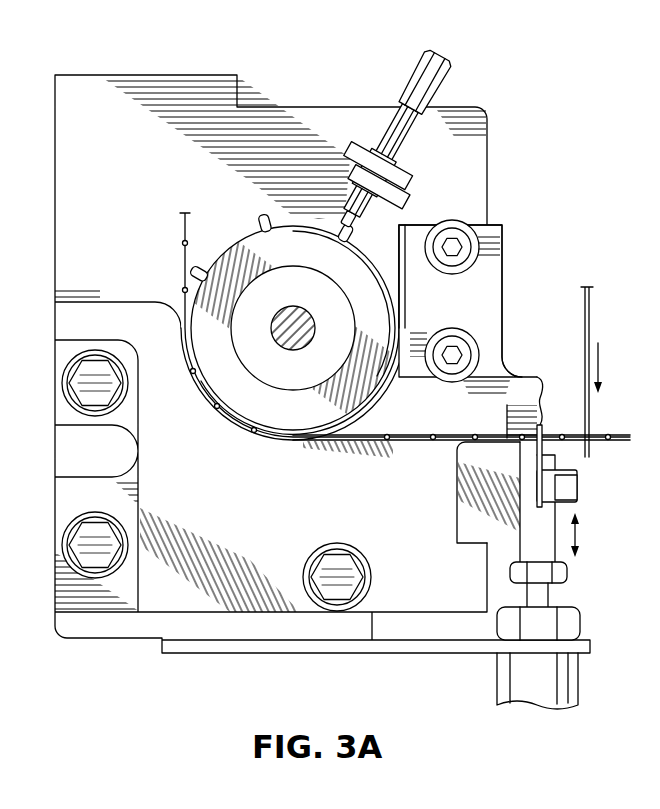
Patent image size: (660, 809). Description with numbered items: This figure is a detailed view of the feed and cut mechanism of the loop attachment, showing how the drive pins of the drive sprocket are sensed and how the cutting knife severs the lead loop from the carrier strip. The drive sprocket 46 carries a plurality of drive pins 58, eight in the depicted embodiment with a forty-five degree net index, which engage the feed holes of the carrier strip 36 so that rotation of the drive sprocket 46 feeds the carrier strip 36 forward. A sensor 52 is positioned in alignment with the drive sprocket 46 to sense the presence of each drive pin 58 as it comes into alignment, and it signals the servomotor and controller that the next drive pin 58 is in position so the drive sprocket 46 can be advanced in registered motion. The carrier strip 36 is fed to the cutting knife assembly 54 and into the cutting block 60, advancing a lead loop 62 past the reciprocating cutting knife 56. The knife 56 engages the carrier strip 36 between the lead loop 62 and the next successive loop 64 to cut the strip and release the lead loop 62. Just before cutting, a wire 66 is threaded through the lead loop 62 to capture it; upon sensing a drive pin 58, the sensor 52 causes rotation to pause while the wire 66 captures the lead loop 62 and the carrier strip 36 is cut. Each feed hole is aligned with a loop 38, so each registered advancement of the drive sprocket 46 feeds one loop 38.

The carrier strip 36 is at (184, 215).
The loop 38 is at (257, 441).
The drive sprocket 46 is at (258, 279).
The sensor 52 is at (448, 62).
The cutting knife assembly 54 is at (599, 471).
The reciprocating cutting knife 56 is at (542, 426).
The drive pins 58 is at (198, 266).
The cutting block 60 is at (535, 377).
The lead loop 62 is at (565, 435).
The next successive loop 64 is at (520, 437).
The wire 66 is at (589, 318).